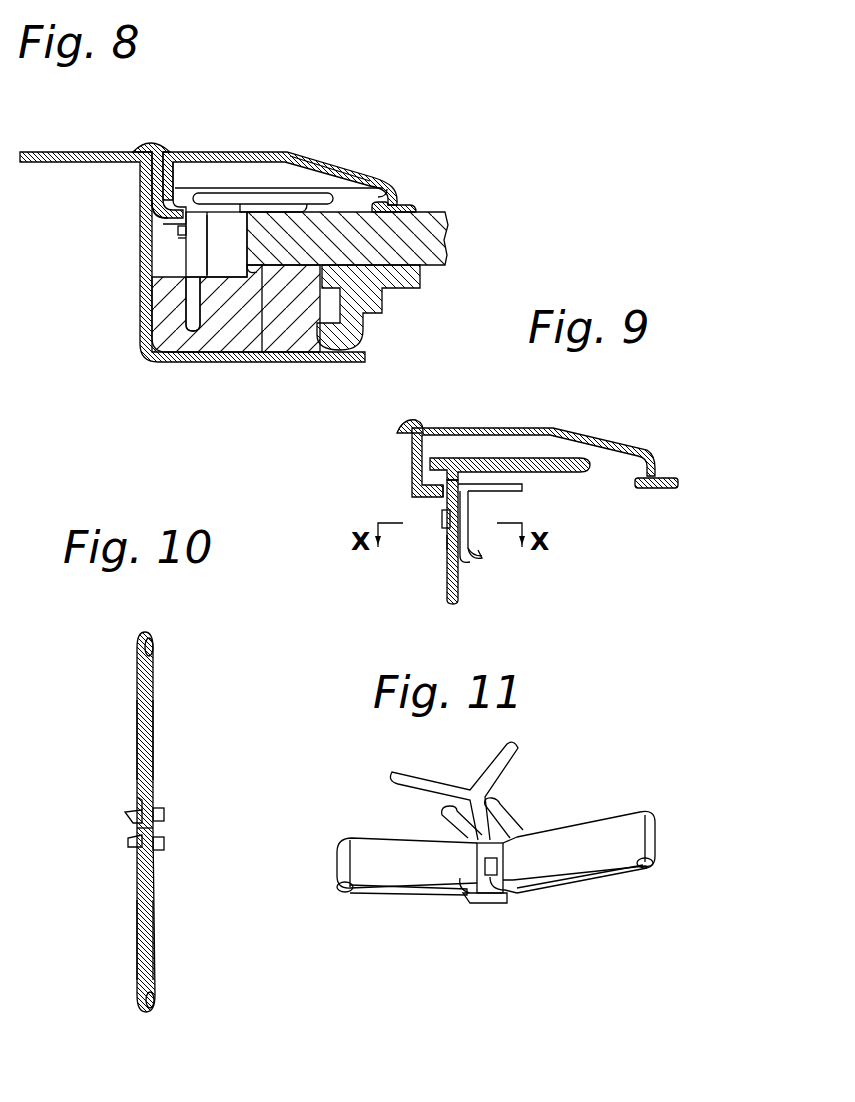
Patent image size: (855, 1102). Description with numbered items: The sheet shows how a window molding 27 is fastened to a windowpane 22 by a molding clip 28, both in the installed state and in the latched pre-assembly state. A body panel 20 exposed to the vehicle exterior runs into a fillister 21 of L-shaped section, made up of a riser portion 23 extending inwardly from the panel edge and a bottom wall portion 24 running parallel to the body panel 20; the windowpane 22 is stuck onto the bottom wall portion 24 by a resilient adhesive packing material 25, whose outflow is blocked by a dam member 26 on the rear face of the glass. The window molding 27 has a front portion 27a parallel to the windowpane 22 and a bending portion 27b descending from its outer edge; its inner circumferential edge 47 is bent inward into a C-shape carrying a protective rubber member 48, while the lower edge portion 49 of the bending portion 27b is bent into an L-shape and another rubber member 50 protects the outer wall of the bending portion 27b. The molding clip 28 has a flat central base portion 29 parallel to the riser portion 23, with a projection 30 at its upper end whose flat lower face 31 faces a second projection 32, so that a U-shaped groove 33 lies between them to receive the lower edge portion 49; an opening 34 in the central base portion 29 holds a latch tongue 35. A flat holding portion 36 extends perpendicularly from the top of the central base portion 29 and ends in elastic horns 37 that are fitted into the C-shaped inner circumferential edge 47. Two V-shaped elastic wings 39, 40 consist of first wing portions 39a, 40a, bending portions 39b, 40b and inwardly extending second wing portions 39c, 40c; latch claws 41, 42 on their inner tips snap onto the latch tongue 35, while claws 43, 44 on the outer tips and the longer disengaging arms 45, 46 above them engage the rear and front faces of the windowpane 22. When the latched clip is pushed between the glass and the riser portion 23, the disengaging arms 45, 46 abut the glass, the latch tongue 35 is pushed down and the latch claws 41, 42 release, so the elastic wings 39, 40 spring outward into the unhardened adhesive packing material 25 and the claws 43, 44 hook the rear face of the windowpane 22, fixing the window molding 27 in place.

In FIG. 8, the body panel 20 is at (62, 151).
In FIG. 8, the fillister 21 is at (138, 364).
In FIG. 8, the windowpane 22 is at (440, 258).
In FIG. 8, the riser portion 23 is at (140, 318).
In FIG. 8, the bottom wall portion 24 is at (230, 357).
In FIG. 8, the adhesive packing material 25 is at (292, 340).
In FIG. 8, the dam member 26 is at (357, 323).
In FIG. 8, the window molding 27 is at (287, 152).
In FIG. 9, the window molding 27 is at (522, 428).
In FIG. 8, the front portion 27a is at (338, 177).
In FIG. 8, the bending portion 27b is at (170, 190).
In FIG. 8, the molding clip 28 is at (214, 170).
In FIG. 8, the central base portion 29 is at (188, 292).
In FIG. 9, the central base portion 29 is at (450, 577).
In FIG. 8, the projection 30 is at (173, 193).
In FIG. 8, the flat lower face 31 is at (183, 205).
In FIG. 8, the projection 32 is at (178, 240).
In FIG. 8, the groove 33 is at (178, 229).
In FIG. 9, the opening 34 is at (443, 495).
In FIG. 10, the opening 34 is at (140, 800).
In FIG. 9, the latch tongue 35 is at (440, 543).
In FIG. 10, the latch tongue 35 is at (155, 832).
In FIG. 8, the holding portion 36 is at (240, 190).
In FIG. 9, the holding portion 36 is at (483, 463).
In FIG. 11, the holding portion 36 is at (477, 817).
In FIG. 8, the elastic horn 37 is at (357, 188).
In FIG. 10, the elastic wing 39 is at (128, 988).
In FIG. 11, the elastic wing 39 is at (330, 815).
In FIG. 10, the first wing portion 39a is at (137, 943).
In FIG. 11, the first wing portion 39a is at (372, 905).
In FIG. 10, the bending portion 39b is at (150, 1005).
In FIG. 11, the bending portion 39b is at (338, 886).
In FIG. 8, the second wing portion 39c is at (223, 262).
In FIG. 10, the second wing portion 39c is at (153, 943).
In FIG. 11, the second wing portion 39c is at (373, 847).
In FIG. 10, the elastic wing 40 is at (130, 678).
In FIG. 11, the elastic wing 40 is at (665, 806).
In FIG. 10, the first wing portion 40a is at (137, 740).
In FIG. 11, the first wing portion 40a is at (577, 883).
In FIG. 10, the bending portion 40b is at (152, 640).
In FIG. 11, the bending portion 40b is at (647, 866).
In FIG. 9, the second wing portion 40c is at (463, 527).
In FIG. 10, the second wing portion 40c is at (153, 740).
In FIG. 11, the second wing portion 40c is at (597, 837).
In FIG. 10, the latch claw 41 is at (128, 842).
In FIG. 9, the latch claw 42 is at (443, 517).
In FIG. 10, the latch claw 42 is at (125, 816).
In FIG. 8, the claw 43 is at (257, 268).
In FIG. 10, the claw 43 is at (165, 845).
In FIG. 11, the claw 43 is at (465, 893).
In FIG. 9, the claw 44 is at (473, 552).
In FIG. 10, the claw 44 is at (165, 813).
In FIG. 11, the claw 44 is at (517, 892).
In FIG. 8, the disengaging arm 45 is at (283, 207).
In FIG. 11, the disengaging arm 45 is at (453, 827).
In FIG. 9, the disengaging arm 46 is at (522, 485).
In FIG. 11, the disengaging arm 46 is at (495, 820).
In FIG. 8, the inner circumferential edge 47 is at (393, 185).
In FIG. 8, the rubber member 48 is at (400, 203).
In FIG. 9, the rubber member 48 is at (662, 480).
In FIG. 8, the lower edge portion 49 is at (155, 207).
In FIG. 8, the rubber member 50 is at (150, 146).
In FIG. 9, the rubber member 50 is at (418, 420).